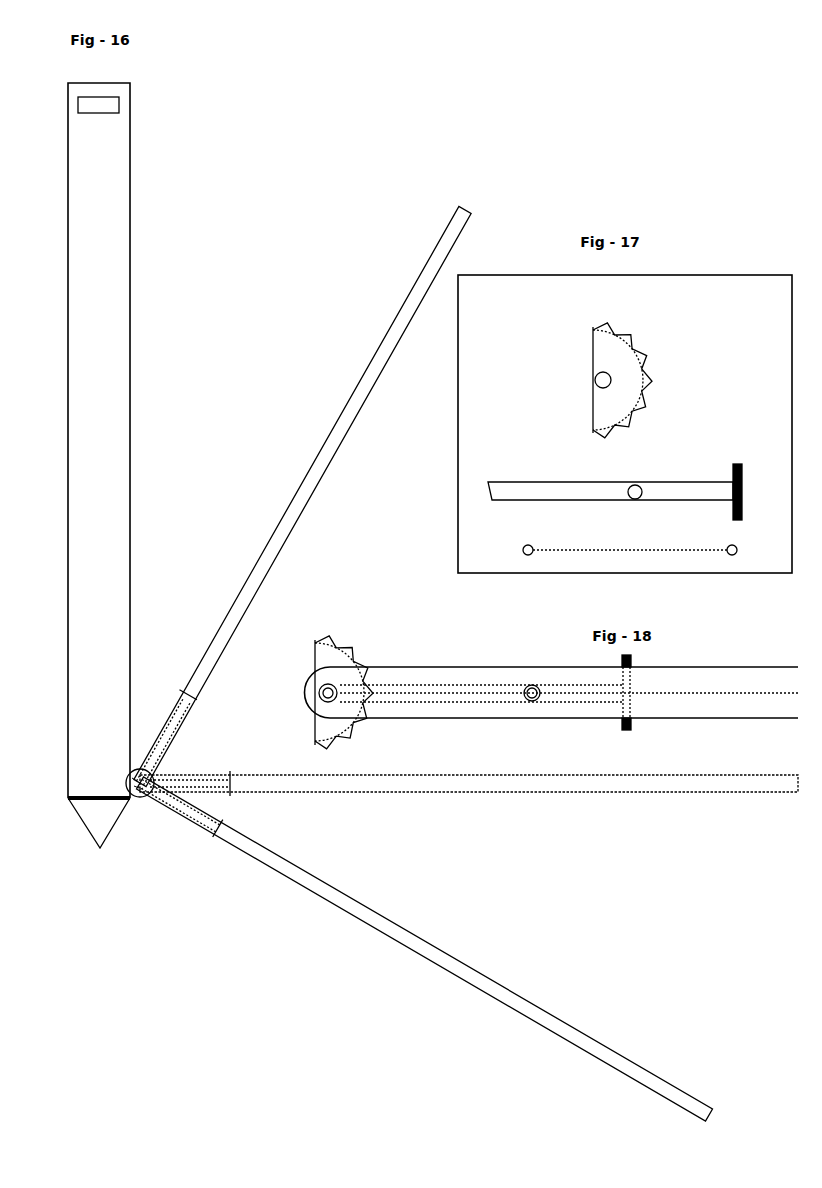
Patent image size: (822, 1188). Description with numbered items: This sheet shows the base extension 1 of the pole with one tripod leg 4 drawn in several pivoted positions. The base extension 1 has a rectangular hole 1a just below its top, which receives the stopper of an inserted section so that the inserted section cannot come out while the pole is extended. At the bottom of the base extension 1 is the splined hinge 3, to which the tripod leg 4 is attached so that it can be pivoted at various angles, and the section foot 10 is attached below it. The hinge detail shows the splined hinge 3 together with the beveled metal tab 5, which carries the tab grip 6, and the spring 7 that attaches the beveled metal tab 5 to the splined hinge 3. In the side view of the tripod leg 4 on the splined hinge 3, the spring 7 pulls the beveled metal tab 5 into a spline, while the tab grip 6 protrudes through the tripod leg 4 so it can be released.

In FIG. 16, the base extension 1 is at (90, 440).
In FIG. 16, the rectangular hole 1a is at (100, 116).
In FIG. 16, the splined hinge 3 is at (150, 773).
In FIG. 17, the splined hinge 3 is at (613, 380).
In FIG. 18, the splined hinge 3 is at (335, 692).
In FIG. 16, the tripod leg 4 is at (466, 664).
In FIG. 18, the tripod leg 4 is at (492, 665).
In FIG. 17, the beveled metal tab 5 is at (610, 480).
In FIG. 18, the beveled metal tab 5 is at (400, 681).
In FIG. 17, the tab grip 6 is at (730, 490).
In FIG. 18, the tab grip 6 is at (636, 724).
In FIG. 17, the spring 7 is at (630, 539).
In FIG. 18, the spring 7 is at (476, 705).
In FIG. 16, the section foot 10 is at (91, 823).